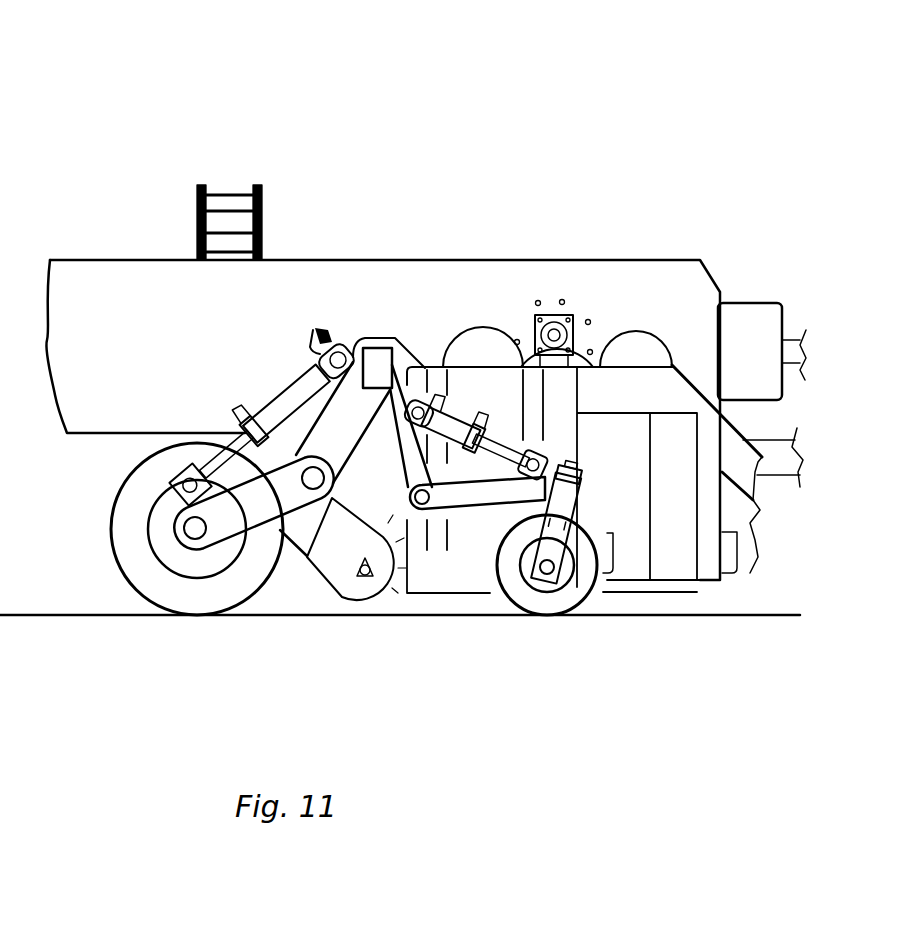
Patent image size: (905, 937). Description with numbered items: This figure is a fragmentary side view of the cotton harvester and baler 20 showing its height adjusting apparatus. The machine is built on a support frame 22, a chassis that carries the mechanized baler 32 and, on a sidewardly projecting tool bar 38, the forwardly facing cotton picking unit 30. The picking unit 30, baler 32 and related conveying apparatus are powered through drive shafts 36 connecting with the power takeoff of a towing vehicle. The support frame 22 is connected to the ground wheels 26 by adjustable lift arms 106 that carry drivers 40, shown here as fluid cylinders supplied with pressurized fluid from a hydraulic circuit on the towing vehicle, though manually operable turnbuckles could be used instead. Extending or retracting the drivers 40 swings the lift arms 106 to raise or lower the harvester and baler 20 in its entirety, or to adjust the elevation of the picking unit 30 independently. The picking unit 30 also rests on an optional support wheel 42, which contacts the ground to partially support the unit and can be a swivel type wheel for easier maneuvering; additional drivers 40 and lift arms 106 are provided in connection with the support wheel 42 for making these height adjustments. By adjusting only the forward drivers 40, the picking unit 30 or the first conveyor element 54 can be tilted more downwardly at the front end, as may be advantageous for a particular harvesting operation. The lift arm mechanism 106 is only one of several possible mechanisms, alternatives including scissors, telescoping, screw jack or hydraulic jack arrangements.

The cotton harvester and baler 20 is at (578, 132).
The support frame 22 is at (777, 477).
The wheels 26 is at (112, 570).
The cotton picking unit 30 is at (738, 427).
The baler 32 is at (485, 258).
The drive shafts 36 is at (568, 320).
The tool bar 38 is at (377, 345).
The drivers 40 is at (278, 390).
The support wheels 42 is at (583, 600).
The first conveyor element 54 is at (325, 585).
The lift arms 106 is at (317, 370).